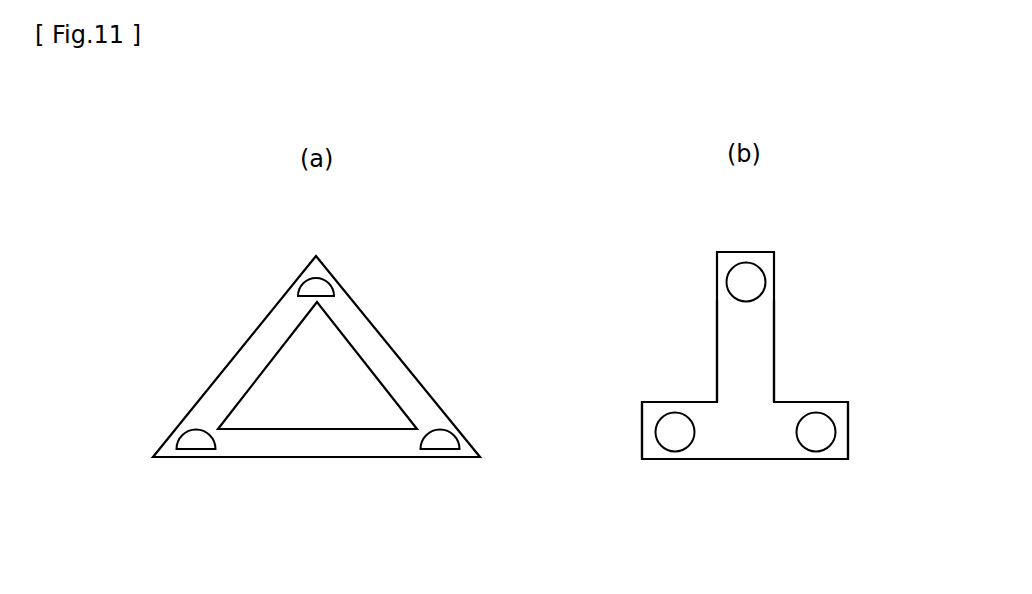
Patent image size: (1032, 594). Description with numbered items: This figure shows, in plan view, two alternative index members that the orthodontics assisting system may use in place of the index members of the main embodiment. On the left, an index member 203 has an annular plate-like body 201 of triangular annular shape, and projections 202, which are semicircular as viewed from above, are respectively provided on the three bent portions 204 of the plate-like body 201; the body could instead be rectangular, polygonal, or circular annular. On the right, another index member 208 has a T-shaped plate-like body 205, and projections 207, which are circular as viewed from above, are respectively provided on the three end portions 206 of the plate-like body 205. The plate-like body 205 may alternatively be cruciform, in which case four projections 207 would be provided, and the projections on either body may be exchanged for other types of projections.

The annular plate-like body 201 is at (235, 362).
The projections 202 is at (330, 287).
The index member 203 is at (279, 294).
The bent portions 204 is at (318, 262).
The T-shaped plate-like body 205 is at (730, 347).
The end portions 206 is at (763, 256).
The projections 207 is at (753, 290).
The index member 208 is at (713, 281).